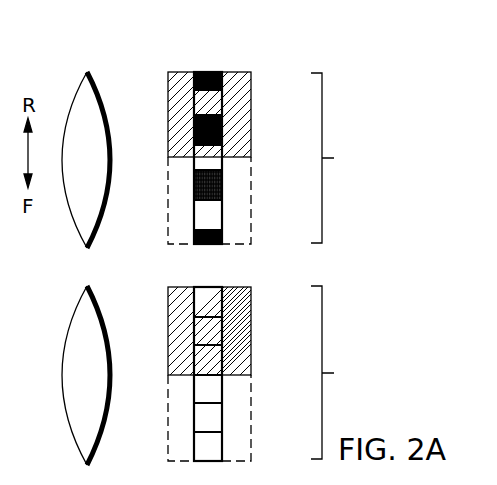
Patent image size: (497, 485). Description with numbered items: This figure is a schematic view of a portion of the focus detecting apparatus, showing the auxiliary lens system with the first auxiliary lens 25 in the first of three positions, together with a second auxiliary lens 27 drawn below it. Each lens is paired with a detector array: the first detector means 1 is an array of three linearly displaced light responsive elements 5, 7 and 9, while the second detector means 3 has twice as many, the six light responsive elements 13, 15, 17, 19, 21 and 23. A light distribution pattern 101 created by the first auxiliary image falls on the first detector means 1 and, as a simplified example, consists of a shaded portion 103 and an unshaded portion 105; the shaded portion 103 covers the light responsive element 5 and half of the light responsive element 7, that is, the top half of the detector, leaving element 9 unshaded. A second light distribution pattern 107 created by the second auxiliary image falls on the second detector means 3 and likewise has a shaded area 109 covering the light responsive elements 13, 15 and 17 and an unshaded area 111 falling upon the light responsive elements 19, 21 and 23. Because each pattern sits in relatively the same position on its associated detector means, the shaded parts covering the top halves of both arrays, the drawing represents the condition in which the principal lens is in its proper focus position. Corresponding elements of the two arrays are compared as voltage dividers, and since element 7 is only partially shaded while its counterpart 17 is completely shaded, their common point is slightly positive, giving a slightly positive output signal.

The first detector means 1 is at (221, 138).
The second detector means 3 is at (249, 360).
The light responsive element 5 is at (208, 103).
The light responsive element 7 is at (208, 158).
The light responsive element 9 is at (208, 215).
The light responsive element 13 is at (208, 302).
The light responsive element 15 is at (208, 331).
The light responsive element 17 is at (208, 360).
The light responsive element 19 is at (208, 389).
The light responsive element 21 is at (208, 417).
The light responsive element 23 is at (208, 446).
The first auxiliary lens 25 is at (102, 217).
The lens 27 is at (102, 439).
The light distribution pattern 101 is at (275, 138).
The shaded portion 103 is at (248, 128).
The unshaded portion 105 is at (245, 215).
The second light distribution pattern 107 is at (275, 360).
The shaded area 109 is at (248, 331).
The unshaded area 111 is at (242, 442).